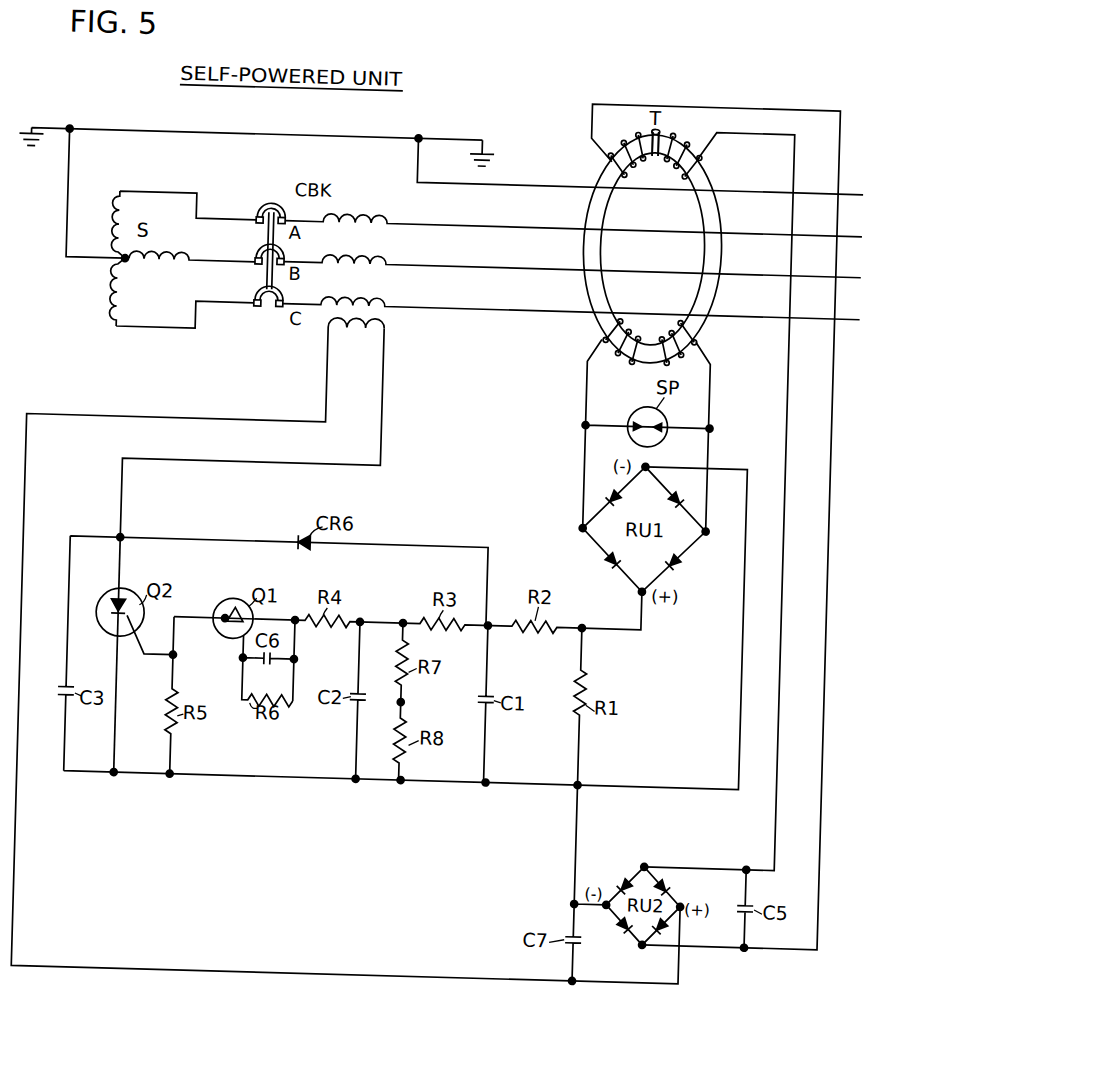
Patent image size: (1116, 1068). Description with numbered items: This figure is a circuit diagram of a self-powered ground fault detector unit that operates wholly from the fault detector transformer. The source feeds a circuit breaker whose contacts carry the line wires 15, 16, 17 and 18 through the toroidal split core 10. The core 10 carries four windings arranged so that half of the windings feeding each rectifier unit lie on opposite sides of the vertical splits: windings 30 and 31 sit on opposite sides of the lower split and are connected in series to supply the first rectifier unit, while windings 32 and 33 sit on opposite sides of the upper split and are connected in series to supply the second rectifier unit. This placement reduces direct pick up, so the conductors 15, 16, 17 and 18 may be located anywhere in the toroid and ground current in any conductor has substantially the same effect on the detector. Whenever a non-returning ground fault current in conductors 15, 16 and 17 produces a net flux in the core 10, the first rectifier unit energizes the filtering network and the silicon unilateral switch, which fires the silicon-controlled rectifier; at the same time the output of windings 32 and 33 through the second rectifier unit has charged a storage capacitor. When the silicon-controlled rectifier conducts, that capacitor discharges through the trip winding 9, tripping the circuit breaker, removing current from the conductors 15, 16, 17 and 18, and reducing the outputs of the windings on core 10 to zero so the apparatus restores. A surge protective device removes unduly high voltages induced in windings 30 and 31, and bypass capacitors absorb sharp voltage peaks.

The shunt circuit breaker trip coil 9 is at (351, 338).
The split core 10 is at (703, 174).
The line wire 15 is at (516, 307).
The line wire 16 is at (515, 265).
The line wire 17 is at (513, 223).
The line wire 18 is at (515, 182).
The winding 30 is at (597, 336).
The winding 31 is at (690, 336).
The winding 32 is at (612, 137).
The winding 33 is at (666, 137).